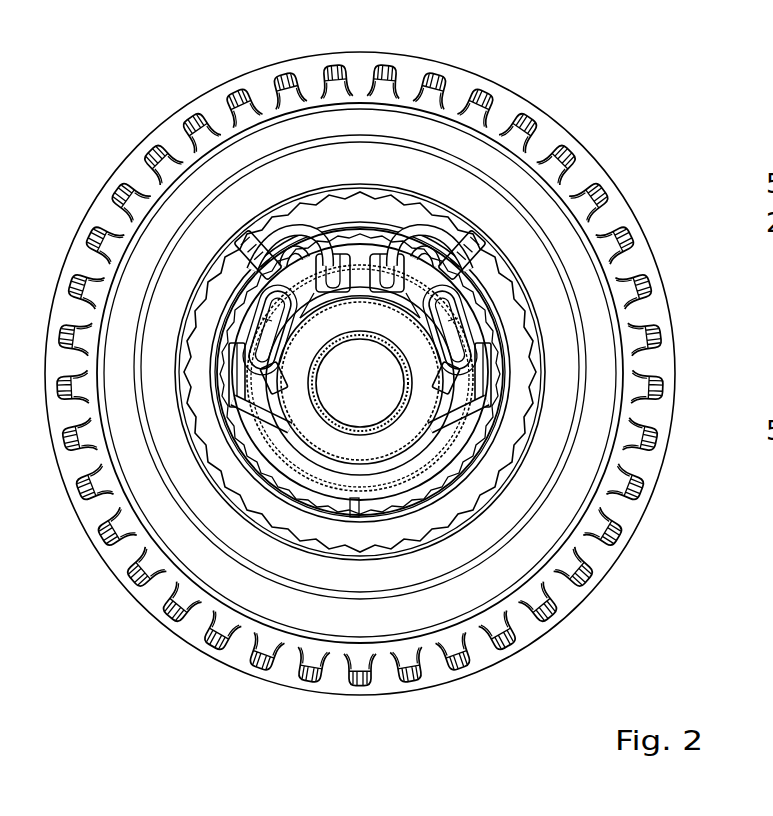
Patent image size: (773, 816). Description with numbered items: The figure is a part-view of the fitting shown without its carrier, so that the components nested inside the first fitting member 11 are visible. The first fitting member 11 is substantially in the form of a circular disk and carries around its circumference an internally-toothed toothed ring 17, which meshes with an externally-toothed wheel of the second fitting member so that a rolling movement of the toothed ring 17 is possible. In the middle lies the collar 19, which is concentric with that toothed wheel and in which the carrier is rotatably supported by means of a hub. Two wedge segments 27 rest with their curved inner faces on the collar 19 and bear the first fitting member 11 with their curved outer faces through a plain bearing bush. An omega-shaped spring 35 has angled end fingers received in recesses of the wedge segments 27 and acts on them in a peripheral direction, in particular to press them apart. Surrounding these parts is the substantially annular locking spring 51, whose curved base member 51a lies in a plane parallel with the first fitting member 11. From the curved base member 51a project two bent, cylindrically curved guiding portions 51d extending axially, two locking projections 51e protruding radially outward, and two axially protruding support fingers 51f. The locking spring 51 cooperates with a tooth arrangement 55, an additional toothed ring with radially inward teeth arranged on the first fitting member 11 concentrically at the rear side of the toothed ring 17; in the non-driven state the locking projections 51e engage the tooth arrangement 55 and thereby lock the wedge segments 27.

The first fitting member 11 is at (616, 183).
The toothed ring 17 is at (506, 650).
The collar 19 is at (412, 425).
The wedge segments 27 is at (485, 407).
The omega-shaped spring 35 is at (493, 398).
The locking spring 51 is at (390, 213).
The curved base member 51a is at (330, 228).
The guiding portions 51d is at (495, 368).
The locking projections 51e is at (482, 262).
The support fingers 51f is at (445, 318).
The tooth arrangement 55 is at (530, 385).